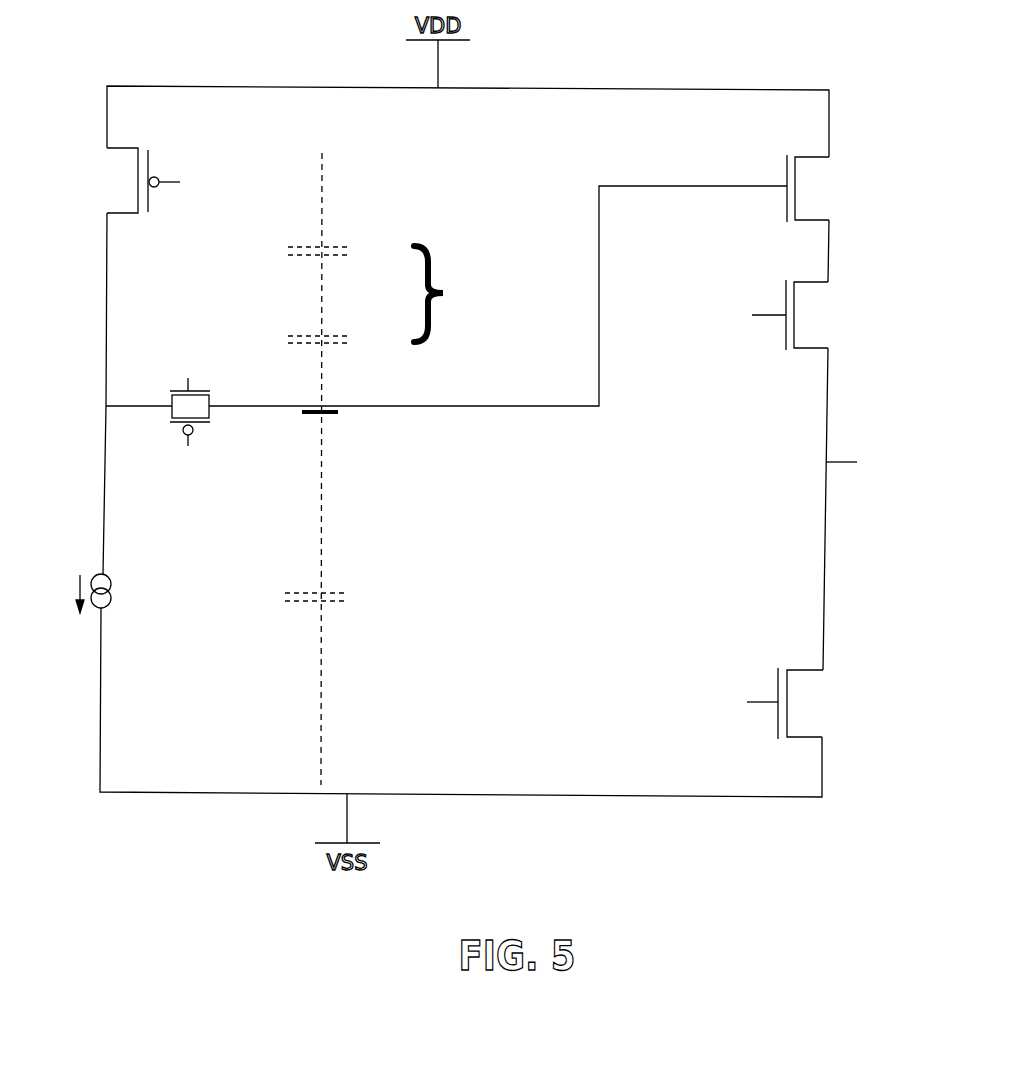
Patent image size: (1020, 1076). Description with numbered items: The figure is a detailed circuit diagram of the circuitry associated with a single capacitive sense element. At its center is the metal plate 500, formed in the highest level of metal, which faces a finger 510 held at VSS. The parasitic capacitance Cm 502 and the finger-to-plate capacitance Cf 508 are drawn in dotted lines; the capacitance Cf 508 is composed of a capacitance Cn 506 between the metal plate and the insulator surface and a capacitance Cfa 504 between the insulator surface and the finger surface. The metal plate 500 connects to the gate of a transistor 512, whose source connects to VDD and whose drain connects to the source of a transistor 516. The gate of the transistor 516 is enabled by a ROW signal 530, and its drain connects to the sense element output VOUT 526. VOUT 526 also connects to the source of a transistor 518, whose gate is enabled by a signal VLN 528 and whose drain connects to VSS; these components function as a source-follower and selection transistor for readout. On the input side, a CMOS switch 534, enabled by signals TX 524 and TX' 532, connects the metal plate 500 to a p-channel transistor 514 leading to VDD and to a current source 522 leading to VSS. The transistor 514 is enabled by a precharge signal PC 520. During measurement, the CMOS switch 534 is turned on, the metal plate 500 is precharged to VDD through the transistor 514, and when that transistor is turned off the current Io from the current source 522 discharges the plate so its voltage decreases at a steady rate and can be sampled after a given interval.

The metal plate 500 is at (316, 420).
The parasitic capacitance Cm 502 is at (345, 603).
The capacitance Cfa between insulator surface and finger surface 504 is at (347, 266).
The capacitance Cn between metal plate and insulator surface 506 is at (347, 352).
The capacitance Cf between finger and metal plate 508 is at (458, 294).
The finger 510 is at (322, 448).
The transistor 512 is at (817, 188).
The p-channel transistor 514 is at (122, 180).
The transistor 516 is at (817, 315).
The transistor 518 is at (809, 703).
The precharge signal PC 520 is at (194, 190).
The current source 522 is at (71, 599).
The signal TX 524 is at (189, 358).
The VOUT 526 is at (874, 467).
The signal VLN 528 is at (735, 701).
The ROW signal 530 is at (740, 309).
The signal TX' 532 is at (191, 457).
The CMOS switch 534 is at (210, 394).